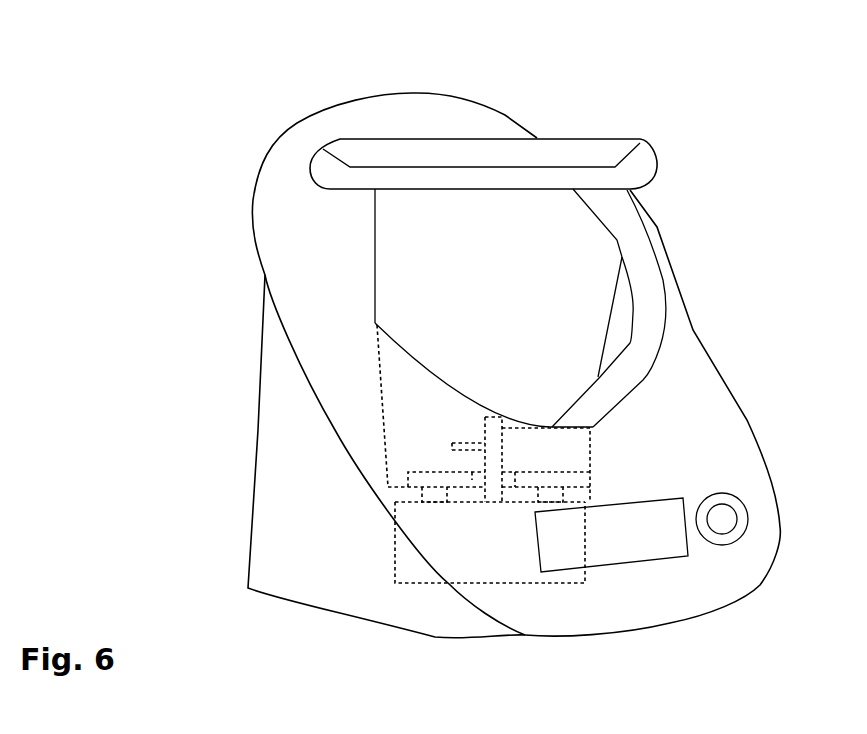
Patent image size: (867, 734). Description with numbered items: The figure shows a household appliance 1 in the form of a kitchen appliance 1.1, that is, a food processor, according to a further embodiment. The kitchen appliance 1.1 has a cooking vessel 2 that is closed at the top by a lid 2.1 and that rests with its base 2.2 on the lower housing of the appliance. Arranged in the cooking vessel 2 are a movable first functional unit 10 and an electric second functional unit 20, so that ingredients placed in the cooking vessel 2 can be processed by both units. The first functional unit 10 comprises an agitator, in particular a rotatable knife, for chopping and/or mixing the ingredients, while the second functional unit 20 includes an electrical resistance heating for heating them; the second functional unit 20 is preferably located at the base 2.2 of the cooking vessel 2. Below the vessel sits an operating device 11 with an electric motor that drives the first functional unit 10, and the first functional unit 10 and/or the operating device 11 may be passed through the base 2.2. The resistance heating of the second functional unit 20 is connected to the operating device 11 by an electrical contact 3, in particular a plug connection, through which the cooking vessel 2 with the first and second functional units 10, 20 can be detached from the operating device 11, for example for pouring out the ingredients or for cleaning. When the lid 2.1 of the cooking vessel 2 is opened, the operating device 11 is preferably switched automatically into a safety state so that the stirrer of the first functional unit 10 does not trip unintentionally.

The household appliance 1 is at (456, 322).
The kitchen appliance 1.1 is at (242, 82).
The cooking vessel 2 is at (560, 243).
The lid 2.1 is at (477, 147).
The base 2.2 is at (580, 487).
The electrical contact 3 is at (550, 495).
The first functional unit 10 is at (493, 437).
The operating device 11 is at (393, 533).
The second functional unit 20 is at (411, 472).